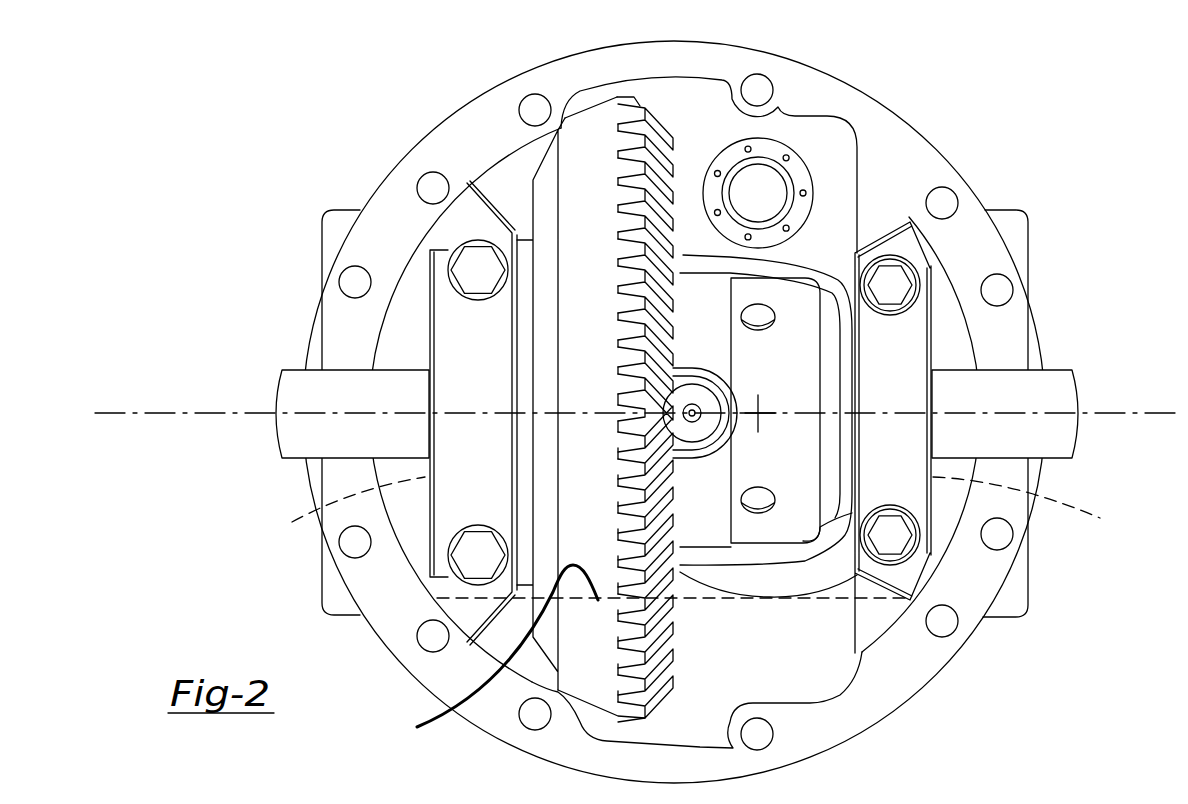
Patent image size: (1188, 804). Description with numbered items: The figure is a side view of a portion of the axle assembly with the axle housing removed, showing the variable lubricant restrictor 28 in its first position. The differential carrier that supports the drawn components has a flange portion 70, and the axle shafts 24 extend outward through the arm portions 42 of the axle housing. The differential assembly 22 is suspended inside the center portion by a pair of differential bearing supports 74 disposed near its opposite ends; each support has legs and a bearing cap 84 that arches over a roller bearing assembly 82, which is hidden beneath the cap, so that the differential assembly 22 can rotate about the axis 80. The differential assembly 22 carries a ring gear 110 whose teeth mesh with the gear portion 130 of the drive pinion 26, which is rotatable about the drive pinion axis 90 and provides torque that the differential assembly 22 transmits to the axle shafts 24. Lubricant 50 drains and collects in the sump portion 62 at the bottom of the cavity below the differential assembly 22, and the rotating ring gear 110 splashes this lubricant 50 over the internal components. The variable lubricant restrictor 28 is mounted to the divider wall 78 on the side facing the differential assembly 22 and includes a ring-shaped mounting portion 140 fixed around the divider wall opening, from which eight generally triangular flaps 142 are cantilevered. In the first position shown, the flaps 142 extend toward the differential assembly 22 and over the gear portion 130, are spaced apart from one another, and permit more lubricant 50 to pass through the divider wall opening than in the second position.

The differential assembly 22 is at (750, 365).
The axle shaft 24 is at (328, 405).
The drive pinion 26 is at (852, 334).
The variable lubricant restrictor 28 is at (805, 155).
The arm portion 42 is at (447, 116).
The lubricant 50 is at (494, 654).
The sump portion 62 is at (738, 662).
The flange portion 70 is at (488, 117).
The differential bearing support 74 is at (455, 232).
The divider wall 78 is at (680, 150).
The axis 80 is at (1172, 392).
The roller bearing assembly 82 is at (293, 521).
The bearing cap 84 is at (461, 425).
The drive pinion axis 90 is at (760, 420).
The ring gear 110 is at (574, 365).
The gear portion 130 is at (800, 278).
The mounting portion 140 is at (787, 155).
The flaps 142 is at (758, 193).